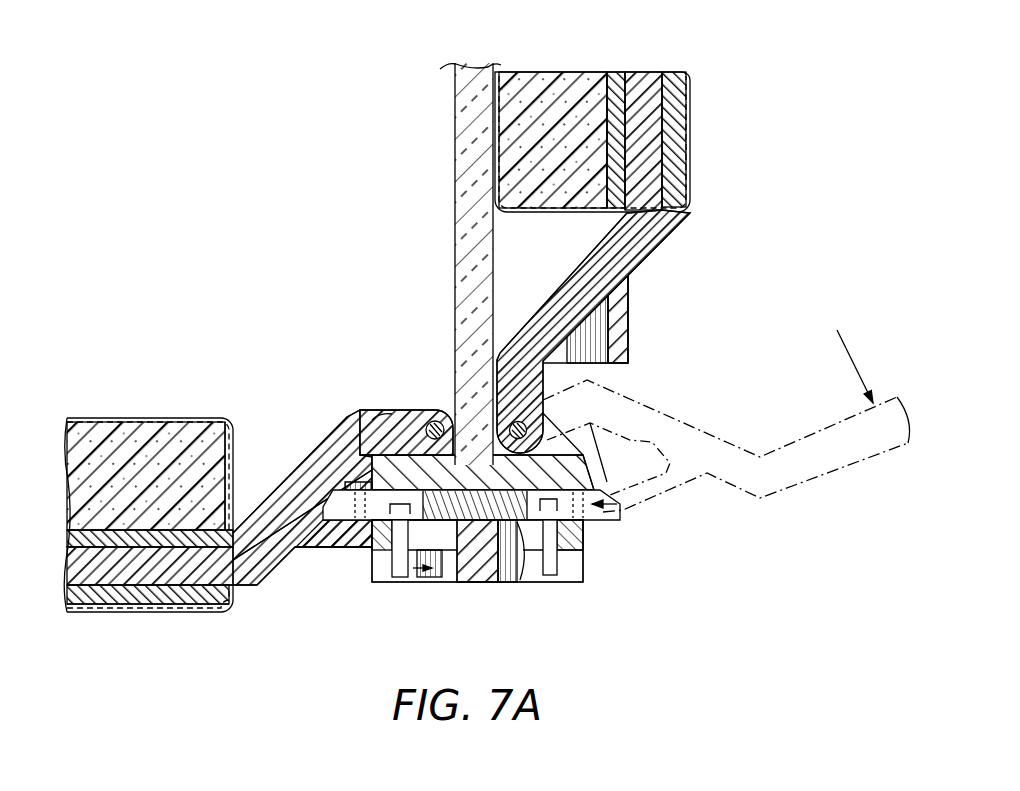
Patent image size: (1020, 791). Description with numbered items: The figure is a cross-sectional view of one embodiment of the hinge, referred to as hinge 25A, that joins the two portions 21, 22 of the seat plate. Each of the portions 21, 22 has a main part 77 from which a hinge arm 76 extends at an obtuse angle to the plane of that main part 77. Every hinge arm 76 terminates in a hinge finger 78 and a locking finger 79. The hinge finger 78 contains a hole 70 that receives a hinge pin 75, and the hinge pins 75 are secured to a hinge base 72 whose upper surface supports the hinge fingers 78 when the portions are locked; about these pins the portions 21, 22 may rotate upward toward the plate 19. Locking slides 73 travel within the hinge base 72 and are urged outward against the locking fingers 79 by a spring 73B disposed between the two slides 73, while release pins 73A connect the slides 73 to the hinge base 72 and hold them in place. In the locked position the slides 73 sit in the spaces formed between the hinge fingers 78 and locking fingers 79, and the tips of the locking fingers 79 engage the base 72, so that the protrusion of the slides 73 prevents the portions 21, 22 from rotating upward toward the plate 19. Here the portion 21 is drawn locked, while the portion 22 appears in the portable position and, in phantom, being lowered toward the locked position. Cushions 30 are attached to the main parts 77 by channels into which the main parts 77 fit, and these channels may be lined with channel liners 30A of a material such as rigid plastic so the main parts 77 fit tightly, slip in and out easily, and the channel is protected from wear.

The plate 19 is at (453, 215).
The portion of seat plate 21 is at (268, 577).
The portion of seat plate 22 is at (677, 222).
The hinge 25A is at (417, 382).
The cushion 30 is at (585, 83).
The channel liner 30A is at (70, 533).
The hole 70 is at (412, 410).
The hinge base 72 is at (582, 462).
The locking slide 73 is at (340, 500).
The release pin 73A is at (400, 578).
The spring 73B is at (533, 578).
The hinge pin 75 is at (388, 412).
The hinge arm 76 is at (647, 245).
The main part 77 is at (655, 118).
The hinge finger 78 is at (433, 408).
The locking finger 79 is at (350, 548).